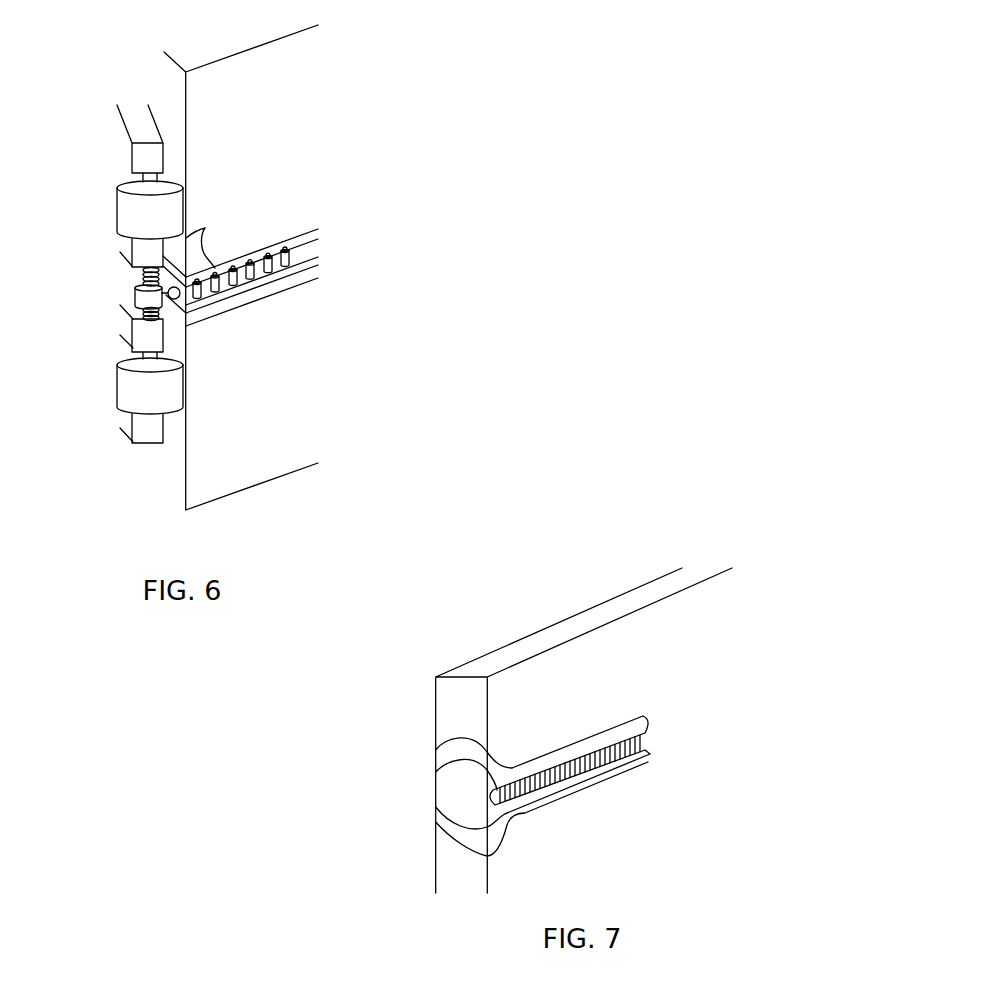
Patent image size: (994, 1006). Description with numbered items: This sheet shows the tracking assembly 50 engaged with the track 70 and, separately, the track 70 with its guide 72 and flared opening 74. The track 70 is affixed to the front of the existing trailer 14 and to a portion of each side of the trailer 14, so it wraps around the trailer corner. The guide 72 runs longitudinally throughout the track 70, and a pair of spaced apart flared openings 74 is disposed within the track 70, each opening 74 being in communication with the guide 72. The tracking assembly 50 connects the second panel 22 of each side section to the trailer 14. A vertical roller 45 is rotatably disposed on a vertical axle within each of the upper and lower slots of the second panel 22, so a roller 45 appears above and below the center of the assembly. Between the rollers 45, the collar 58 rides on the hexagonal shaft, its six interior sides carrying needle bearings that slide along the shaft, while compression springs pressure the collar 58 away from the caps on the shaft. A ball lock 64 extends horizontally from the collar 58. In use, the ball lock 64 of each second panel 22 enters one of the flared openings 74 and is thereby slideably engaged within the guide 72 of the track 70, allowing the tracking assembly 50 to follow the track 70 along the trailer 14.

In FIG. 6, the existing trailer 14 is at (193, 482).
In FIG. 7, the existing trailer 14 is at (631, 597).
In FIG. 6, the second panel 22 is at (143, 123).
In FIG. 6, the vertical roller 45 is at (121, 205).
In FIG. 6, the tracking assembly 50 is at (88, 336).
In FIG. 6, the collar 58 is at (136, 293).
In FIG. 6, the ball lock 64 is at (178, 298).
In FIG. 6, the track 70 is at (205, 228).
In FIG. 7, the track 70 is at (436, 772).
In FIG. 6, the guide 72 is at (251, 262).
In FIG. 7, the guide 72 is at (652, 738).
In FIG. 7, the flared opening 74 is at (449, 789).